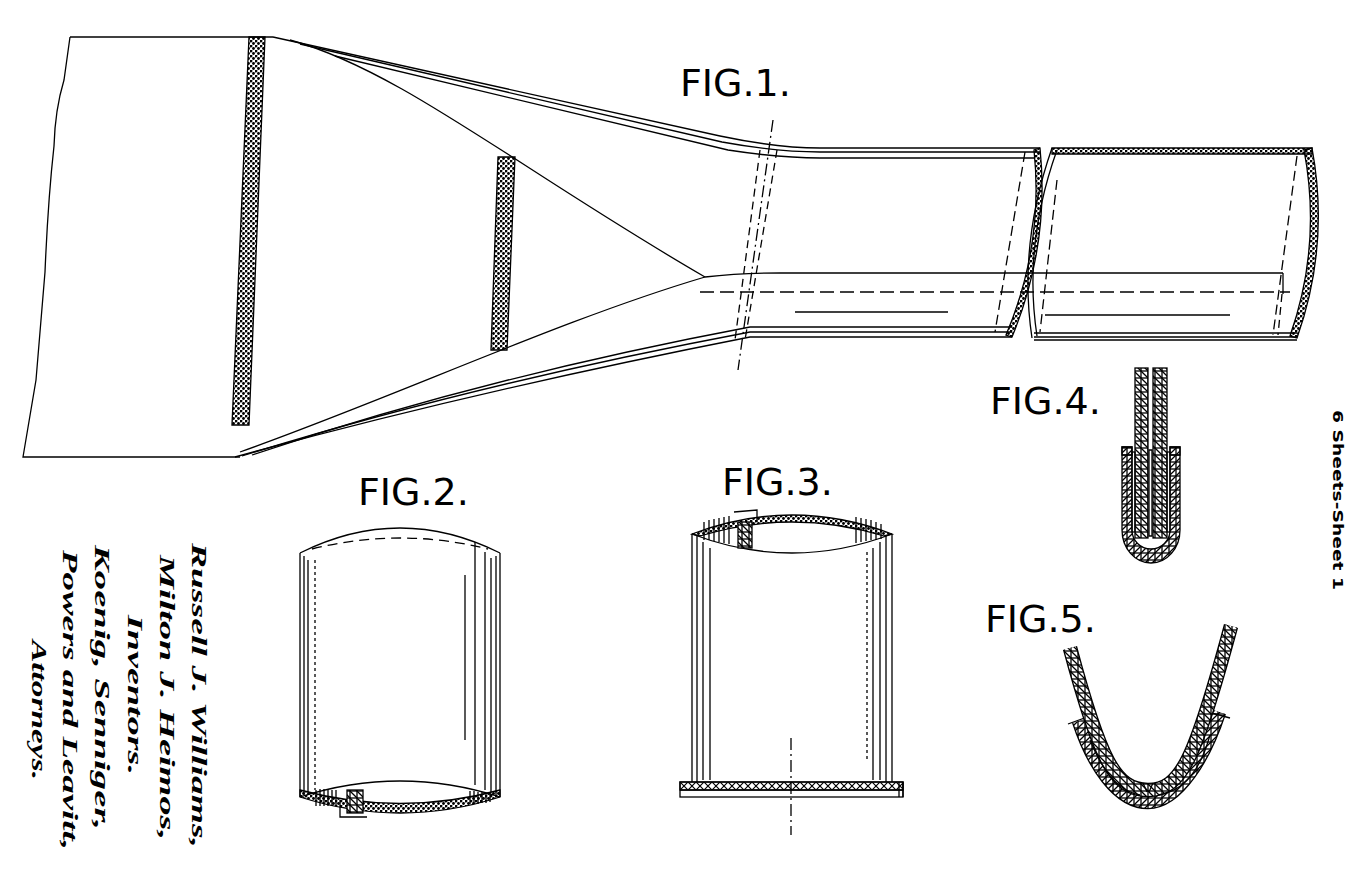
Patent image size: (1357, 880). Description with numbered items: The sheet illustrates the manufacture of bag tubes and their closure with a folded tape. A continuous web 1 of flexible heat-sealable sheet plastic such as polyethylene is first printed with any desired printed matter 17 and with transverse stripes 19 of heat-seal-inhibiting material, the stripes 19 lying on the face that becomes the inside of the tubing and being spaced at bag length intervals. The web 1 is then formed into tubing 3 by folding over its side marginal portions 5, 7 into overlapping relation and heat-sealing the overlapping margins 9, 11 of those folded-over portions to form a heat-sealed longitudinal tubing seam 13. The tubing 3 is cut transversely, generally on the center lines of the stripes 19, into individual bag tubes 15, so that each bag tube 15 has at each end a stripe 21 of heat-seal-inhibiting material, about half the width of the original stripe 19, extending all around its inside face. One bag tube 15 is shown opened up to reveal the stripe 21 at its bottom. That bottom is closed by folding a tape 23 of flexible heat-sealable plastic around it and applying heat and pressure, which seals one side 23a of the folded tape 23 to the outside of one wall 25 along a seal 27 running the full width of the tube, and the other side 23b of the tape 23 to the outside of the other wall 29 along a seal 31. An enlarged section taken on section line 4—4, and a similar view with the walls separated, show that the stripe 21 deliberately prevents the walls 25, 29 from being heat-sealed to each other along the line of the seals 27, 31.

In FIG. 1, the web 1 is at (65, 461).
In FIG. 1, the tubing 3 is at (900, 146).
In FIG. 1, the side marginal portion 5 is at (583, 346).
In FIG. 1, the side marginal portion 7 is at (569, 124).
In FIG. 1, the overlapping margin 9 is at (968, 272).
In FIG. 1, the overlapping margin 11 is at (1010, 283).
In FIG. 1, the longitudinal tubing seam 13 is at (830, 275).
In FIG. 2, the longitudinal tubing seam 13 is at (358, 790).
In FIG. 1, the bag tube 15 is at (1186, 140).
In FIG. 2, the bag tube 15 is at (504, 622).
In FIG. 1, the printed matter 17 is at (131, 208).
In FIG. 2, the printed matter 17 is at (398, 645).
In FIG. 3, the printed matter 17 is at (793, 642).
In FIG. 1, the stripes 19 is at (236, 324).
In FIG. 1, the stripe 21 is at (1056, 178).
In FIG. 2, the stripe 21 is at (396, 543).
In FIG. 3, the stripe 21 is at (846, 520).
In FIG. 4, the stripe 21 is at (1146, 553).
In FIG. 5, the stripe 21 is at (1195, 738).
In FIG. 3, the tape 23 is at (727, 800).
In FIG. 4, the tape 23 is at (1172, 562).
In FIG. 5, the tape 23 is at (1133, 815).
In FIG. 4, the side of folded tape 23a is at (1122, 453).
In FIG. 5, the side of folded tape 23a is at (1075, 728).
In FIG. 3, the side of folded tape 23b is at (900, 783).
In FIG. 4, the side of folded tape 23b is at (1180, 453).
In FIG. 5, the side of folded tape 23b is at (1224, 730).
In FIG. 4, the wall 25 is at (1135, 422).
In FIG. 5, the wall 25 is at (1068, 675).
In FIG. 4, the seal 27 is at (1132, 497).
In FIG. 5, the seal 27 is at (1100, 775).
In FIG. 3, the wall 29 is at (806, 707).
In FIG. 4, the wall 29 is at (1167, 422).
In FIG. 5, the wall 29 is at (1225, 660).
In FIG. 3, the seal 31 is at (882, 796).
In FIG. 4, the seal 31 is at (1170, 497).
In FIG. 5, the seal 31 is at (1207, 775).
In FIG. 3, the section line 4- 4 is at (815, 748).